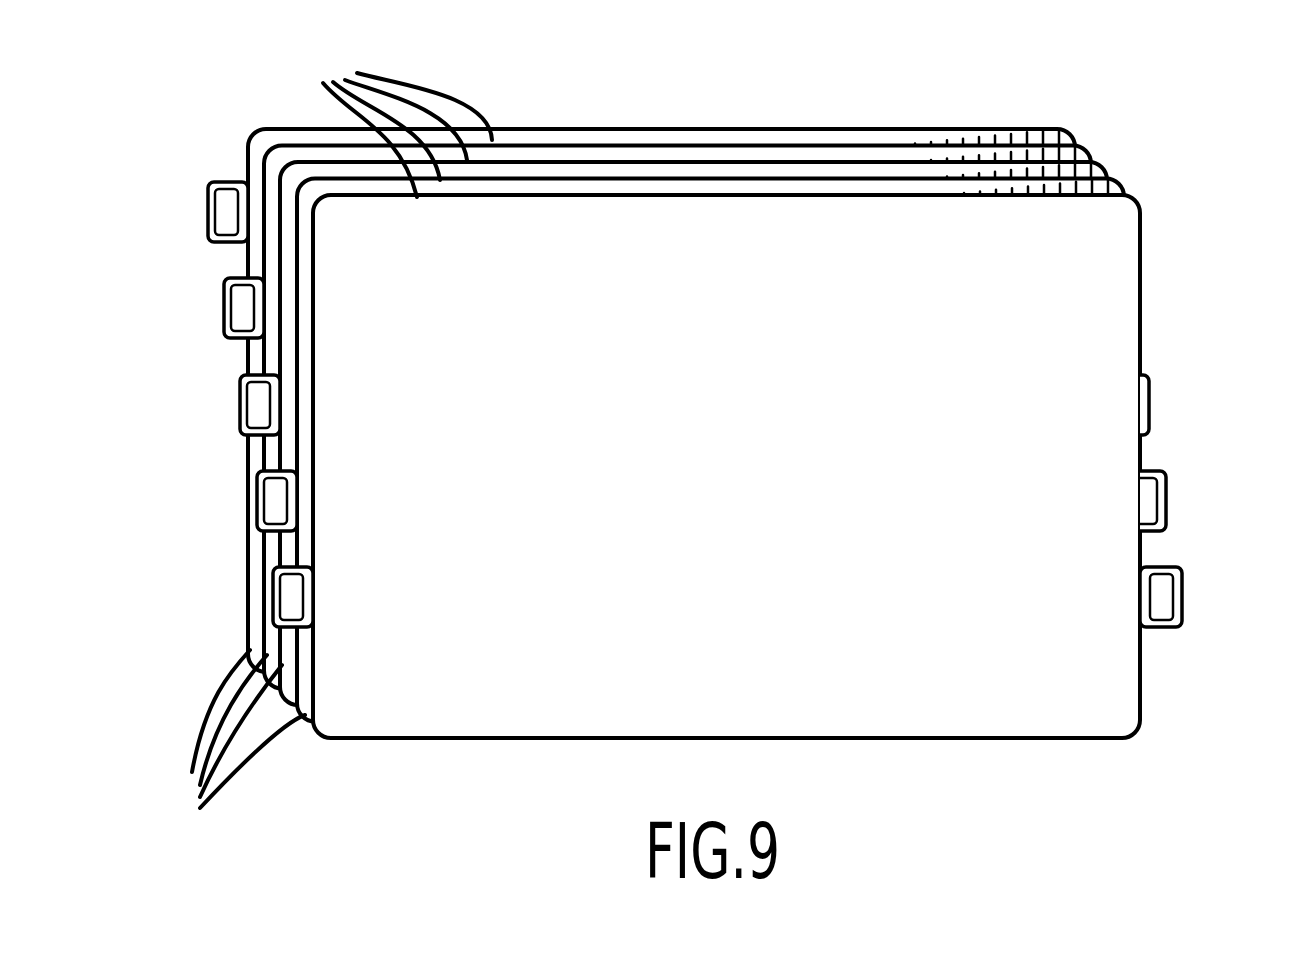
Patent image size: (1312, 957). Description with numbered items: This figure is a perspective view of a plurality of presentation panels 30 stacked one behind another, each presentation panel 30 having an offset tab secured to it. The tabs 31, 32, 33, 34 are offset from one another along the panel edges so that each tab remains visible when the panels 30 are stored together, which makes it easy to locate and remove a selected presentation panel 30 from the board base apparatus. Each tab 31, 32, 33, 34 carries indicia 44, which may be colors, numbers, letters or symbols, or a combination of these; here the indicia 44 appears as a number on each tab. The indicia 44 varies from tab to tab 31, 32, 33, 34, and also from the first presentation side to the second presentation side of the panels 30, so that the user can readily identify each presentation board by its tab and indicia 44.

The presentation panel 30 is at (1097, 827).
The tab 31 is at (277, 590).
The tab 32 is at (257, 493).
The tab 33 is at (242, 400).
The tab 34 is at (230, 302).
The indicia 44 is at (213, 238).